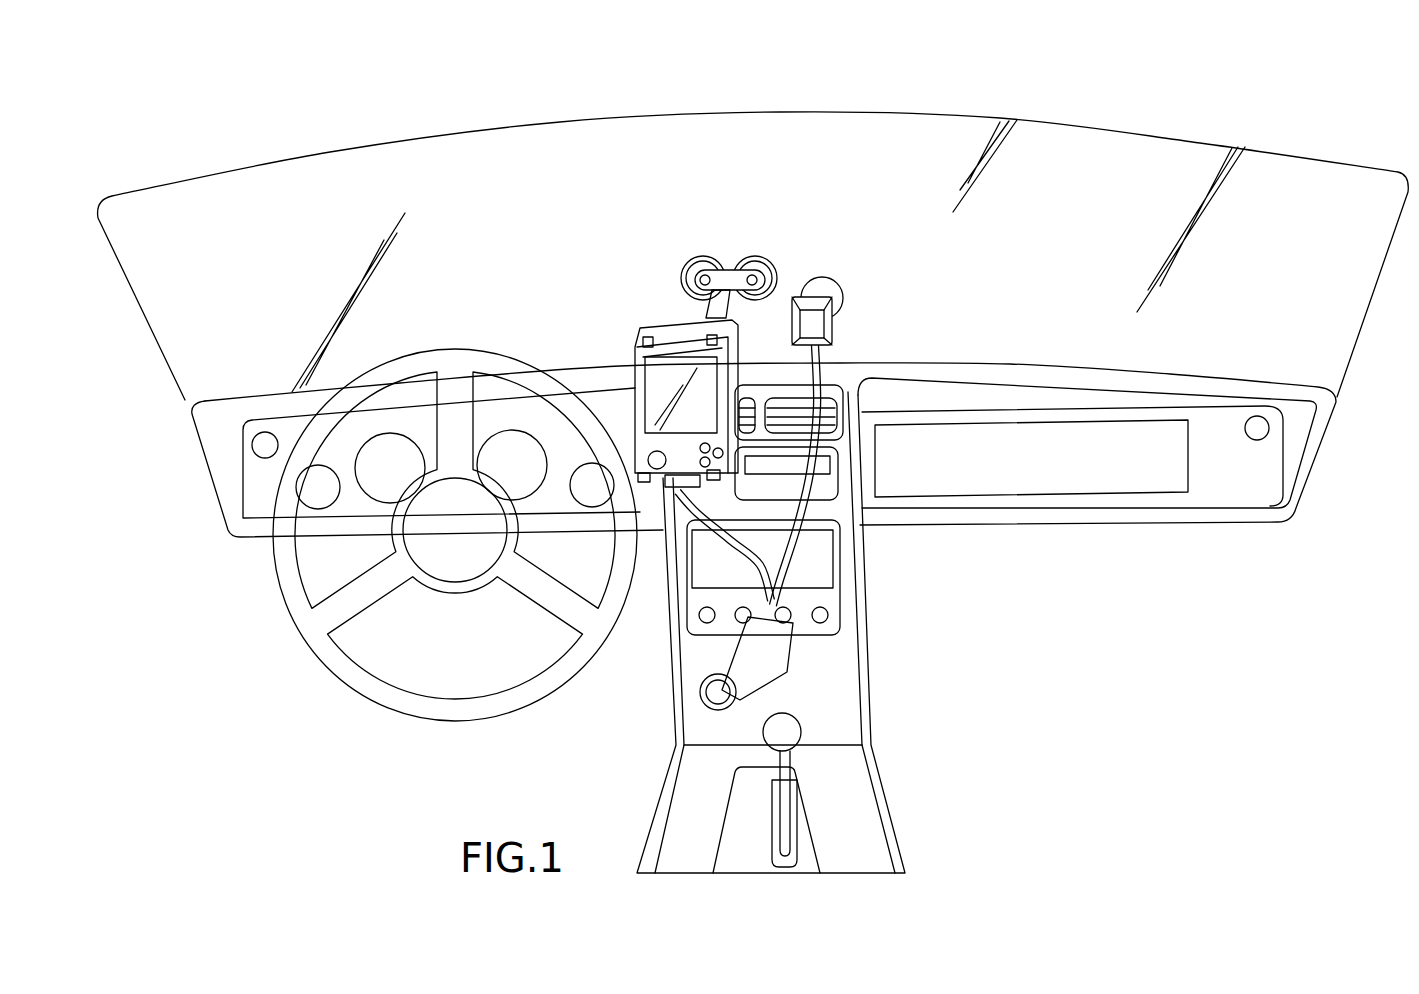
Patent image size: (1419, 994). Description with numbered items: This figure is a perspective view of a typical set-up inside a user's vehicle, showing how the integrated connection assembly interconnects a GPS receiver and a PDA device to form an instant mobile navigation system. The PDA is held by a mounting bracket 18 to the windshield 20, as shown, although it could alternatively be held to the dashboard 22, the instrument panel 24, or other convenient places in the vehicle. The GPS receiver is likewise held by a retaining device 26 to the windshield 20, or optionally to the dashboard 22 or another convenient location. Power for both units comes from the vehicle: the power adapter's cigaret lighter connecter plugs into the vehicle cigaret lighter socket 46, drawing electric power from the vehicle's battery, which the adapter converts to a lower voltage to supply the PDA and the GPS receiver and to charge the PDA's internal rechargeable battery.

The mounting bracket 18 is at (700, 308).
The windshield 20 is at (910, 125).
The dashboard 22 is at (975, 370).
The instrument panel 24 is at (762, 433).
The retaining device 26 is at (835, 280).
The vehicle cigaret lighter socket 46 is at (702, 688).